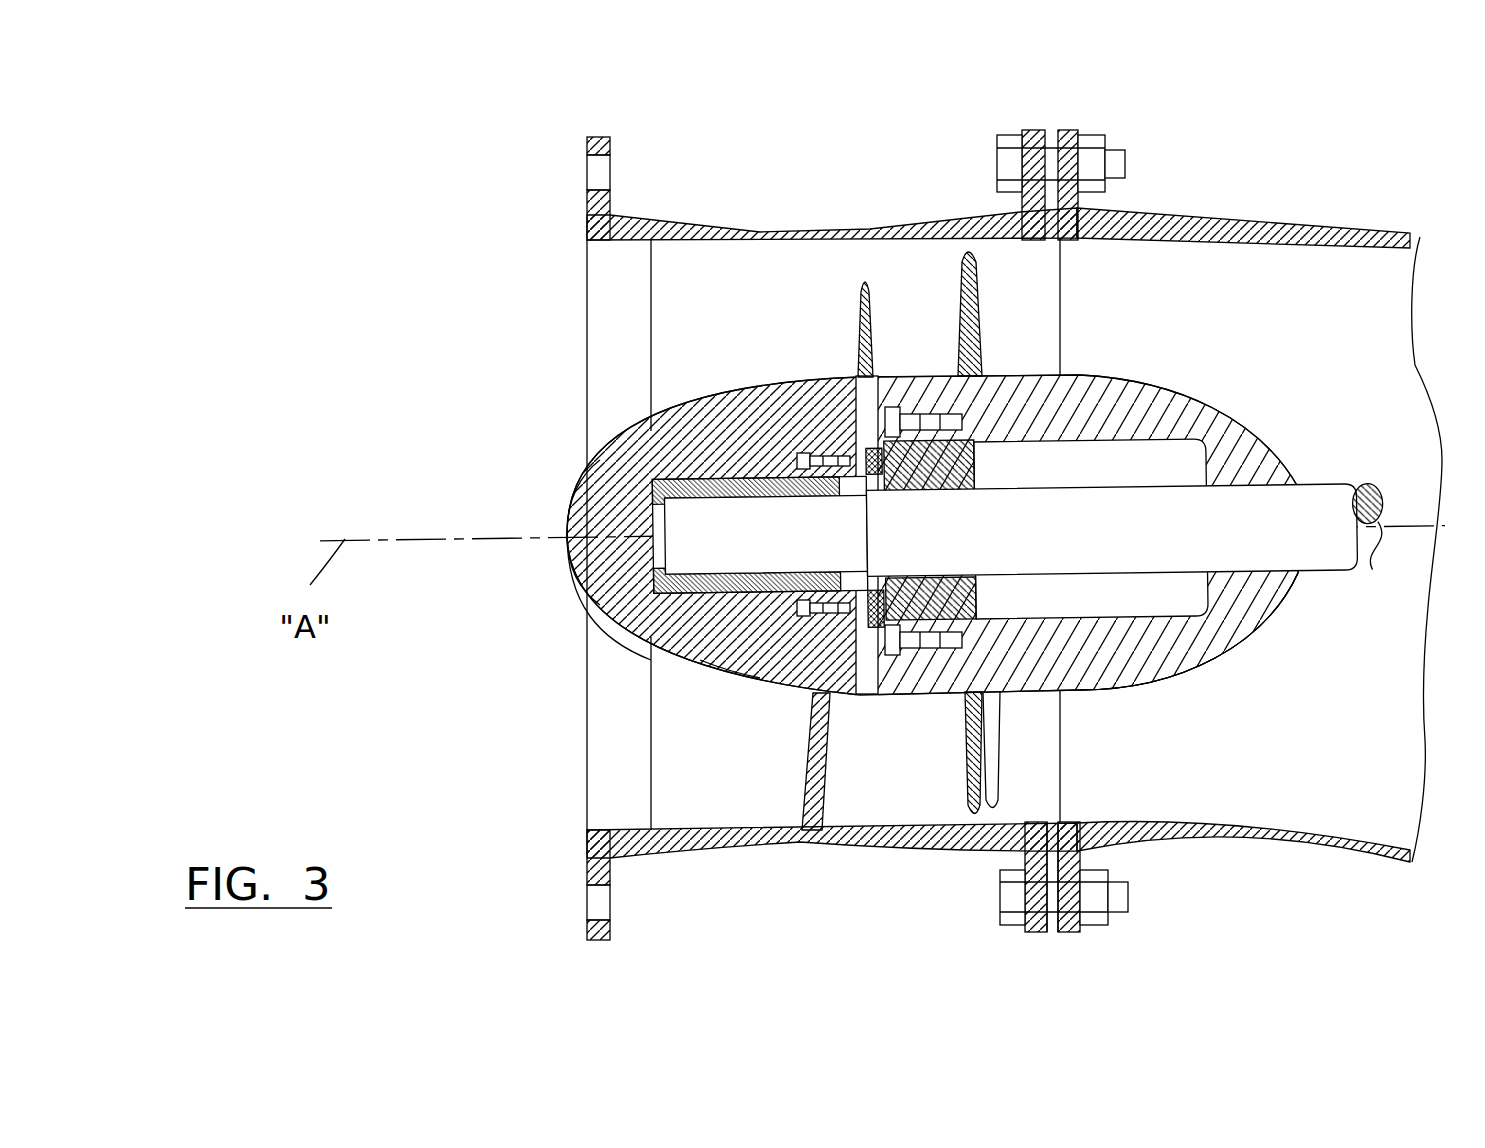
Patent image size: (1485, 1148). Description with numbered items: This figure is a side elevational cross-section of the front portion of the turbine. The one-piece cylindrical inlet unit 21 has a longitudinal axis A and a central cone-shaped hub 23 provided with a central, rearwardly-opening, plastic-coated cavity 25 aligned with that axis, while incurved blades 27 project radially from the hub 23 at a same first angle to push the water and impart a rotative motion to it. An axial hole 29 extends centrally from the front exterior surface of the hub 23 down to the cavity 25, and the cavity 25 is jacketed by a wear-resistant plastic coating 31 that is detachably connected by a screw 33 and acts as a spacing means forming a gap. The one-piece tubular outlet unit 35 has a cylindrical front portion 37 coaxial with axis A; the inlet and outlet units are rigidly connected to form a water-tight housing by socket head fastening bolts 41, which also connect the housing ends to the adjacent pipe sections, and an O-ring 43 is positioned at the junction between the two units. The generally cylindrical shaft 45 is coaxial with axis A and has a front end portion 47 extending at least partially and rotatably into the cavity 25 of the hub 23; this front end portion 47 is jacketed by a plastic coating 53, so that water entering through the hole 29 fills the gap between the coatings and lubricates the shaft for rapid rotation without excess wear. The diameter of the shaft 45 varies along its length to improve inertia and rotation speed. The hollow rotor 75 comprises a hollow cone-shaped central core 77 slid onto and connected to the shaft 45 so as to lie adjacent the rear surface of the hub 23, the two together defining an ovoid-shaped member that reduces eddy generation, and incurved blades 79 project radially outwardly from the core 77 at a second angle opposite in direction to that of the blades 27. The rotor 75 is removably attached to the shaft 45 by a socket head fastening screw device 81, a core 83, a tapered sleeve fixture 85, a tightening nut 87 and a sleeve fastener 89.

The cylindrical inlet unit 21 is at (680, 233).
The central cone-shaped hub 23 is at (571, 569).
The central cavity 25 is at (653, 530).
The incurved blades 27 is at (767, 262).
The axial hole 29 is at (564, 534).
The plastic coating 31 is at (725, 615).
The screw 33 is at (800, 655).
The tubular outlet unit 35 is at (1242, 222).
The front portion 37 is at (1225, 822).
The socket head fastening bolts 41 is at (614, 162).
The O-ring 43 is at (1063, 823).
The shaft 45 is at (1170, 504).
The front end portion 47 is at (693, 517).
The plastic coating 53 is at (645, 650).
The hollow rotor 75 is at (1082, 374).
The cone-shaped central core 77 is at (1213, 637).
The incurved blades 79 is at (978, 813).
The socket head fastening screw device 81 is at (905, 408).
The core 83 is at (960, 443).
The tapered sleeve fixture 85 is at (947, 578).
The tightening nut 87 is at (913, 693).
The sleeve fastener 89 is at (867, 692).